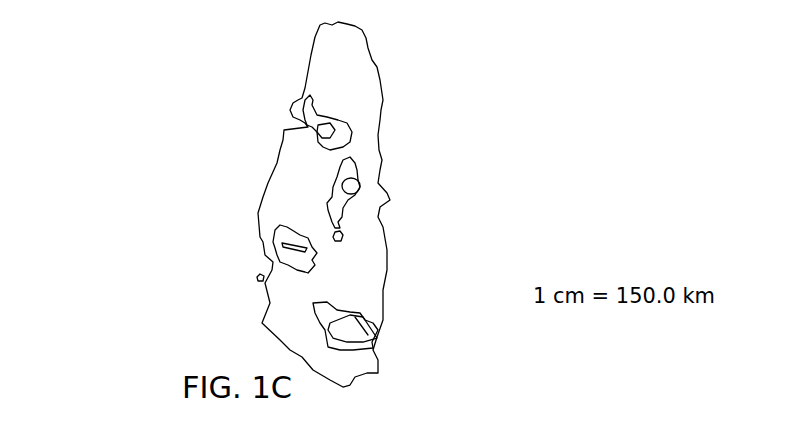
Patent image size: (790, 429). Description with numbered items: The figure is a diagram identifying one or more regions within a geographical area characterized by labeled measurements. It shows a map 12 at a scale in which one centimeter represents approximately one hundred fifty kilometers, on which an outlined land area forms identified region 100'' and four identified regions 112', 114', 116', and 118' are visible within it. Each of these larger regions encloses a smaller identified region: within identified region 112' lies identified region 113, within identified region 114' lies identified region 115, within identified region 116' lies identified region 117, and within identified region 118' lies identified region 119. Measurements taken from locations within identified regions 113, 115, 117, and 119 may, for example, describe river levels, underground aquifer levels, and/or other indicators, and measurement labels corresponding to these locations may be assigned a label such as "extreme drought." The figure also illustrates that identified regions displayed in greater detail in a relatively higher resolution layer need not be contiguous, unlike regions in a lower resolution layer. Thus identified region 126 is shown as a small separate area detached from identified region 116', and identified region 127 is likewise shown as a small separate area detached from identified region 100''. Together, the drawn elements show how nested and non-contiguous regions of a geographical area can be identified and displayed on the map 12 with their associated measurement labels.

The map 12 is at (112, 146).
The identified region 100'' is at (367, 204).
The identified region 112' is at (276, 109).
The identified region 113 is at (310, 125).
The identified region 114' is at (242, 249).
The identified region 115 is at (282, 245).
The identified region 116' is at (395, 188).
The identified region 117 is at (360, 188).
The identified region 118' is at (400, 320).
The identified region 119 is at (365, 337).
The identified region 126 is at (343, 237).
The identified region 127 is at (264, 278).